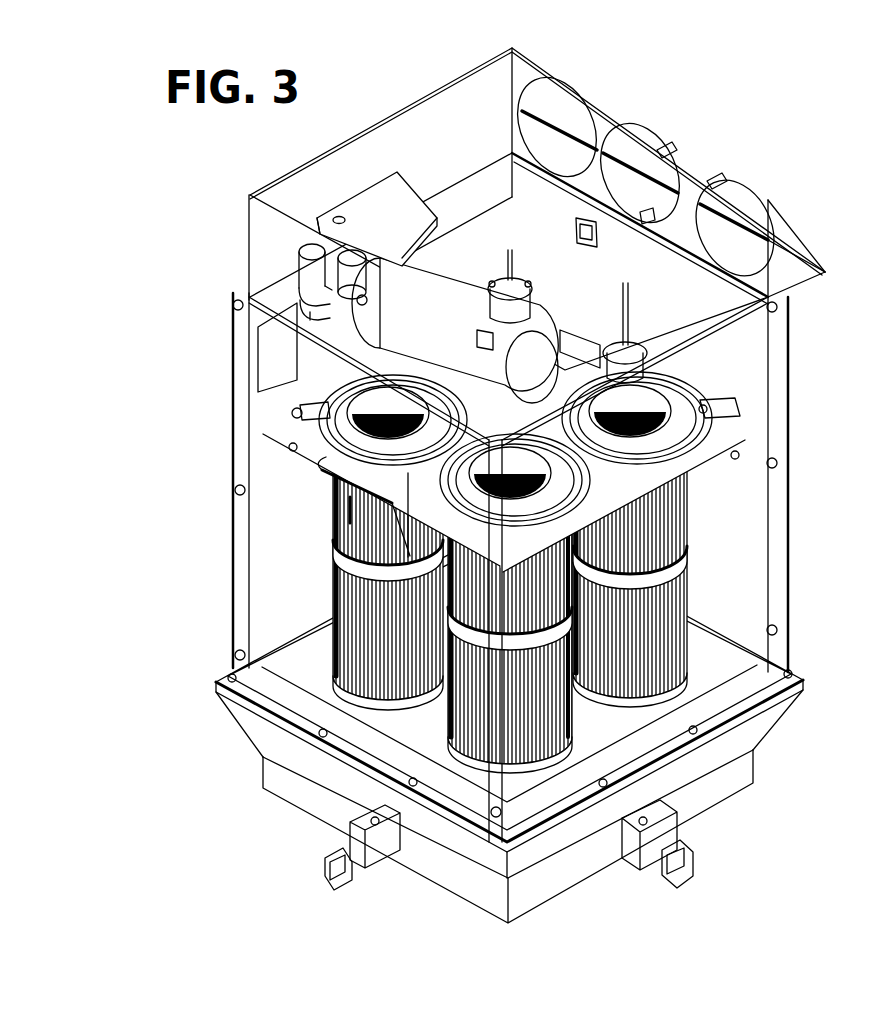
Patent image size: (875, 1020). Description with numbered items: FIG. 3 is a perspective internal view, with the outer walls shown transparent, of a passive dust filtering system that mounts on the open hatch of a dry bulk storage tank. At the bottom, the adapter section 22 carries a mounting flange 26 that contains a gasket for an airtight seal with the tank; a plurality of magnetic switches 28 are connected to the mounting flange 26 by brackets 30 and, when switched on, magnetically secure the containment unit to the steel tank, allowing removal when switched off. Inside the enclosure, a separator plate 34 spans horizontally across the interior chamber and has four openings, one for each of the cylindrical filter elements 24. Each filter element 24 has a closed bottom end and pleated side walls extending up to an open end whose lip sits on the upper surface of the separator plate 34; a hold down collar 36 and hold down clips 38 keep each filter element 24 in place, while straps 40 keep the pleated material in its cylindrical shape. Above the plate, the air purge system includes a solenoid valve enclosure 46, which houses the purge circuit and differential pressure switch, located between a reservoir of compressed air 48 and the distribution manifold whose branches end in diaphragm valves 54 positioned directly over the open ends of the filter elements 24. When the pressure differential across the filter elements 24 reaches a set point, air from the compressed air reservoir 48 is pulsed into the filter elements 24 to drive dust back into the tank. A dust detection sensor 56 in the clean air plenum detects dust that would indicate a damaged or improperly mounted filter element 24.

The adapter section 22 is at (720, 746).
The filter elements 24 is at (668, 608).
The mounting flange 26 is at (483, 893).
The magnetic switches 28 is at (340, 868).
The brackets 30 is at (380, 847).
The separator plate 34 is at (292, 420).
The hold down collar 36 is at (660, 433).
The hold down clips 38 is at (705, 400).
The straps 40 is at (338, 556).
The solenoid valve enclosure 46 is at (390, 195).
The reservoir of compressed air 48 is at (400, 322).
The diaphragm valves 54 is at (640, 349).
The dust detection sensor 56 is at (597, 231).